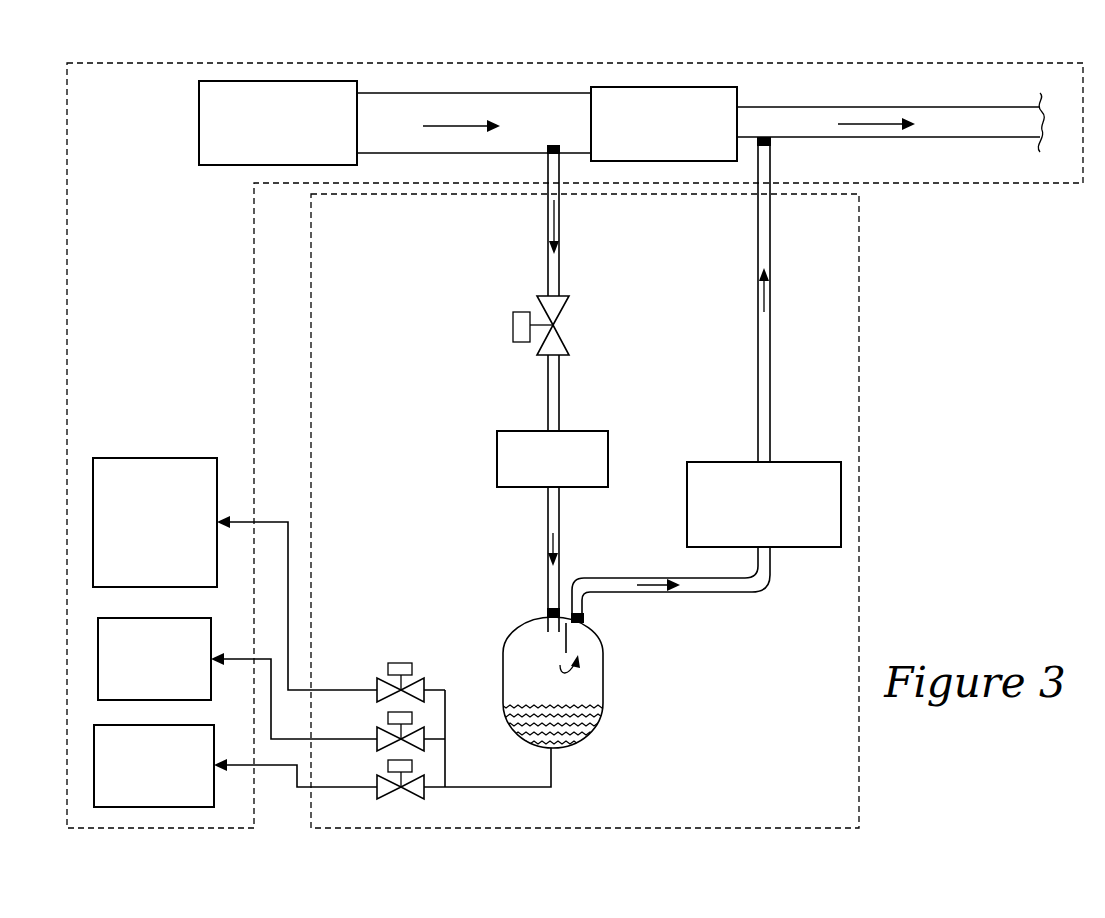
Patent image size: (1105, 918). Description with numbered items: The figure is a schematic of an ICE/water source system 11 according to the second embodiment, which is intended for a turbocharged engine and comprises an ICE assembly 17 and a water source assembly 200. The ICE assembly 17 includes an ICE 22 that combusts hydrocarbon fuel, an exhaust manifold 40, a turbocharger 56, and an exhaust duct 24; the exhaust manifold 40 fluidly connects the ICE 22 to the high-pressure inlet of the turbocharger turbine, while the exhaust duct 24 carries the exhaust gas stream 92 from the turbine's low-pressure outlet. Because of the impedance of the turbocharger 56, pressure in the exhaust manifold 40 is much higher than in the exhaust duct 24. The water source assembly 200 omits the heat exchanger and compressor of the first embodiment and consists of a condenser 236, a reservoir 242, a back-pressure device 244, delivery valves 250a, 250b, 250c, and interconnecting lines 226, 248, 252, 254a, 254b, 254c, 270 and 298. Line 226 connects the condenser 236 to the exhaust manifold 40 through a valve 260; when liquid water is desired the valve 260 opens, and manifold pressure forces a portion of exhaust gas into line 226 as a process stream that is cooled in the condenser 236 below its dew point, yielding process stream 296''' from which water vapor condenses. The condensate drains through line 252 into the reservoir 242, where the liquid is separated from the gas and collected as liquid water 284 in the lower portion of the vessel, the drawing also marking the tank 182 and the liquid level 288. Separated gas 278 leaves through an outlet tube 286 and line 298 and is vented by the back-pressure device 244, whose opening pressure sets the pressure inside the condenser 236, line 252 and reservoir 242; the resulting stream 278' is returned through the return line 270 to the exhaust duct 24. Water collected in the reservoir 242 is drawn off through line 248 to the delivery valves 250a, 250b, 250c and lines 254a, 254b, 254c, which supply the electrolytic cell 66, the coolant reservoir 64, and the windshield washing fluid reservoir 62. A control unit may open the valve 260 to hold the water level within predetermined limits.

The ICE/water source system 11 is at (955, 273).
The ICE assembly 17 is at (660, 59).
The ICE 22 is at (278, 123).
The exhaust duct 24 is at (945, 107).
The exhaust manifold 40 is at (372, 93).
The turbocharger 56 is at (664, 124).
The windshield washing fluid reservoir 62 is at (155, 522).
The coolant reservoir 64 is at (154, 659).
The electrolytic cell 66 is at (154, 766).
The exhaust gas stream 92 is at (852, 77).
The water collection tank 182 is at (584, 650).
The water source assembly 200 is at (866, 470).
The line 226 is at (546, 250).
The condenser 236 is at (552, 459).
The reservoir 242 is at (612, 700).
The back-pressure device 244 is at (764, 504).
The line 248 is at (463, 789).
The delivery valve 250a is at (415, 776).
The delivery valve 250b is at (415, 728).
The delivery valve 250c is at (415, 680).
The line 252 is at (546, 522).
The line 254a is at (264, 766).
The line 254b is at (272, 680).
The line 254c is at (288, 555).
The valve 260 is at (566, 342).
The return line 270 is at (770, 354).
The gas 278 is at (620, 606).
The stream 278' is at (741, 287).
The collected water 284 is at (595, 727).
The gas outlet tube 286 is at (566, 640).
The liquid water 288 is at (571, 725).
The process stream 296''' is at (604, 528).
The line 298 is at (692, 592).